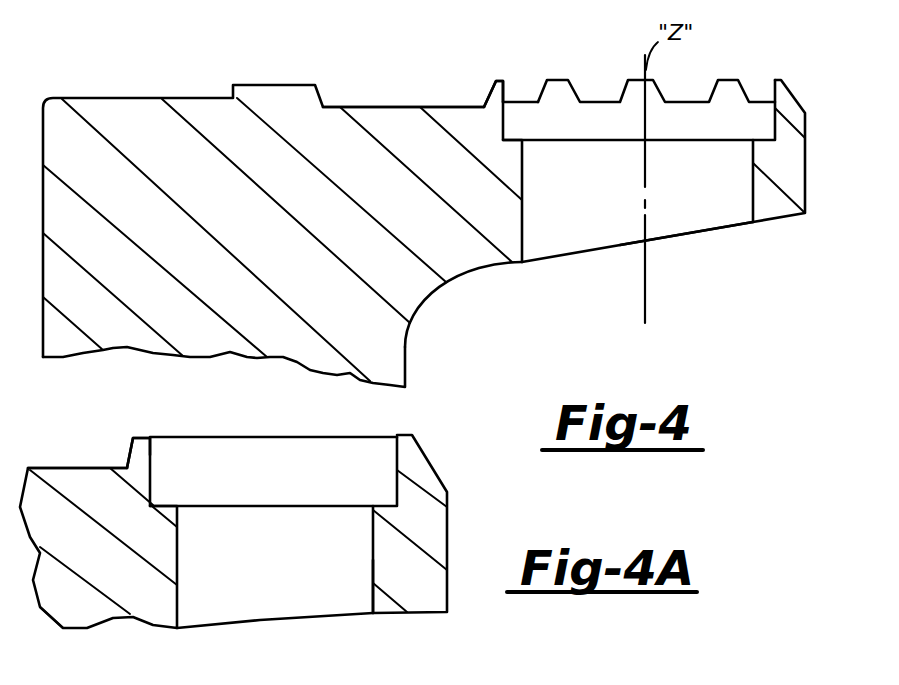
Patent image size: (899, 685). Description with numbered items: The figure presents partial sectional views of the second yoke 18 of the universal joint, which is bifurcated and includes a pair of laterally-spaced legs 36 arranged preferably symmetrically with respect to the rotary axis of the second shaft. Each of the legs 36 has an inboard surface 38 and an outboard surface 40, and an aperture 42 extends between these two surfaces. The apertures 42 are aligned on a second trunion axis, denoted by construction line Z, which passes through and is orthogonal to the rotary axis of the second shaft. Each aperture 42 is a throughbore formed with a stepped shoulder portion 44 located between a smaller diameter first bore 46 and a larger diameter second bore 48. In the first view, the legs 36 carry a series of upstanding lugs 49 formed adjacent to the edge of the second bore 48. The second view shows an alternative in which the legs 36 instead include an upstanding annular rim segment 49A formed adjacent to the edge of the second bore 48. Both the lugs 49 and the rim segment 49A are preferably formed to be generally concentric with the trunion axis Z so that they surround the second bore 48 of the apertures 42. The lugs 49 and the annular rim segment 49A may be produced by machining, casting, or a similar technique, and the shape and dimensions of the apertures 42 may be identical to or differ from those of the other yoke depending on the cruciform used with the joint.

In FIG. 4, the second yoke 18 is at (354, 98).
In FIG. 4A, the second yoke 18 is at (70, 460).
In FIG. 4, the outboard surface 40 is at (470, 106).
In FIG. 4A, the outboard surface 40 is at (92, 468).
In FIG. 4, the upstanding lugs 49 is at (502, 80).
In FIG. 4A, the upstanding annular rim segment 49A is at (138, 452).
In FIG. 4, the second bore 48 is at (775, 117).
In FIG. 4A, the second bore 48 is at (163, 467).
In FIG. 4, the stepped shoulder portion 44 is at (512, 140).
In FIG. 4A, the stepped shoulder portion 44 is at (163, 506).
In FIG. 4, the aperture 42 is at (697, 192).
In FIG. 4A, the aperture 42 is at (282, 587).
In FIG. 4, the first bore 46 is at (750, 202).
In FIG. 4A, the first bore 46 is at (373, 560).
In FIG. 4, the legs 36 is at (812, 155).
In FIG. 4A, the legs 36 is at (464, 517).
In FIG. 4, the inboard surface 38 is at (521, 263).